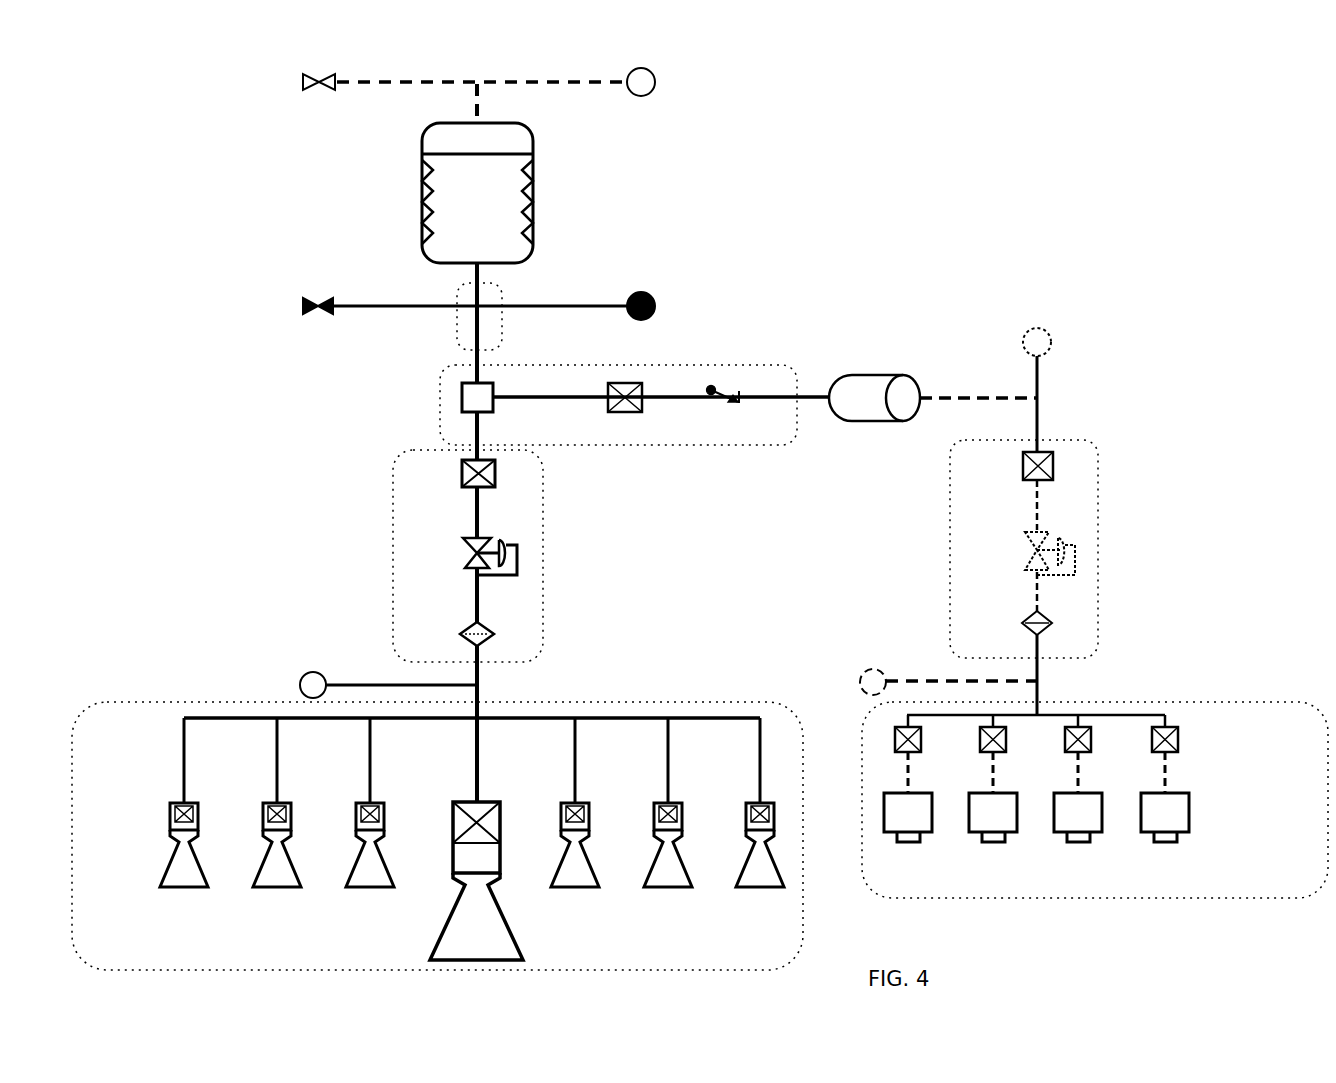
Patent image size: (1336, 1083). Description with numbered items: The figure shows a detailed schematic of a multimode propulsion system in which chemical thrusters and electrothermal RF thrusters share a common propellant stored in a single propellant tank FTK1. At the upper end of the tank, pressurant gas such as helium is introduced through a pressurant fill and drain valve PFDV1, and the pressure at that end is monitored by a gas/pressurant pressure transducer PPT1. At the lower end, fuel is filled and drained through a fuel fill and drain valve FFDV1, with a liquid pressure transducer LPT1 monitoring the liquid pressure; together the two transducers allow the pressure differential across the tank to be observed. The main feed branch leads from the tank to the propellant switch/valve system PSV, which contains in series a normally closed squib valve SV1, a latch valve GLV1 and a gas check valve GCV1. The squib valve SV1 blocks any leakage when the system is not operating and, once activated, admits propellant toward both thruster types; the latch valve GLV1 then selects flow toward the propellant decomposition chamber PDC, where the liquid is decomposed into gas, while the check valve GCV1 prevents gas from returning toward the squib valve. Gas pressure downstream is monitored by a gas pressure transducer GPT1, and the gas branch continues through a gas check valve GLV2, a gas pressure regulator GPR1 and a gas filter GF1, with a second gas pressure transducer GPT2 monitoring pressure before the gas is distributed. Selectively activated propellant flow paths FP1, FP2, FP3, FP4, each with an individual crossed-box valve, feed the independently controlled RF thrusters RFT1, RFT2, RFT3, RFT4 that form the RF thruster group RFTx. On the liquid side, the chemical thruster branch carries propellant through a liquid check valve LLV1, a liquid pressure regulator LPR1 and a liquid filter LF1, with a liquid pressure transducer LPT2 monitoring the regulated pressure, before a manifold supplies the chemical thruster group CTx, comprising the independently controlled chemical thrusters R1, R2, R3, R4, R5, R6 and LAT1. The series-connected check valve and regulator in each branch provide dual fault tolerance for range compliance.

The pressurant fill and drain valve PFDV1 is at (427, 100).
The gas/pressurant pressure transducer PPT1 is at (663, 100).
The propellant tank FTK1 is at (509, 193).
The fuel fill and drain valve FFDV1 is at (289, 294).
The liquid pressure transducer LPT1 is at (661, 293).
The propellant switch/valve system PSV is at (591, 405).
The squib valve SV1 is at (500, 413).
The latch valve GLV1 is at (624, 415).
The gas check valve GCV1 is at (726, 417).
The propellant decomposition chamber PDC is at (874, 419).
The gas pressure transducer GPT1 is at (1056, 329).
The gas check valve GLV2 is at (1004, 466).
The gas pressure regulator GPR1 is at (1017, 553).
The gas filter GF1 is at (1013, 626).
The gas pressure transducer GPT2 is at (850, 668).
The liquid check valve LLV1 is at (449, 475).
The liquid pressure regulator LPR1 is at (461, 556).
The liquid filter LF1 is at (454, 636).
The liquid pressure transducer LPT2 is at (290, 673).
The chemical thrusters CTx is at (437, 836).
The chemical thruster R1 is at (184, 818).
The chemical thruster R2 is at (277, 818).
The chemical thruster R3 is at (370, 818).
The chemical thruster R4 is at (575, 818).
The chemical thruster R5 is at (668, 818).
The chemical thruster R6 is at (760, 818).
The chemical thruster LAT1 is at (476, 881).
The RF thrusters RFTx is at (1095, 800).
The propellant flow path FP1 is at (923, 754).
The propellant flow path FP2 is at (1008, 754).
The propellant flow path FP3 is at (1093, 754).
The propellant flow path FP4 is at (1180, 754).
The RF thruster RFT1 is at (903, 836).
The RF thruster RFT2 is at (988, 836).
The RF thruster RFT3 is at (1076, 834).
The RF thruster RFT4 is at (1161, 834).